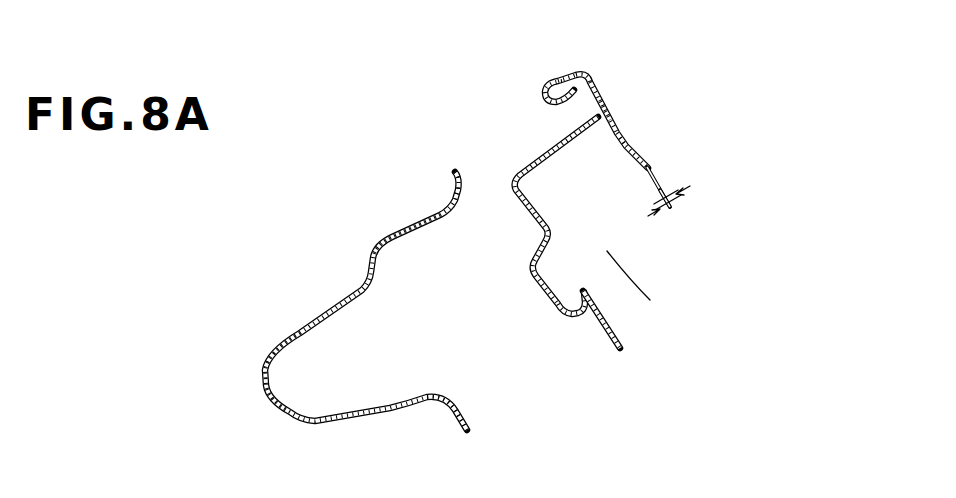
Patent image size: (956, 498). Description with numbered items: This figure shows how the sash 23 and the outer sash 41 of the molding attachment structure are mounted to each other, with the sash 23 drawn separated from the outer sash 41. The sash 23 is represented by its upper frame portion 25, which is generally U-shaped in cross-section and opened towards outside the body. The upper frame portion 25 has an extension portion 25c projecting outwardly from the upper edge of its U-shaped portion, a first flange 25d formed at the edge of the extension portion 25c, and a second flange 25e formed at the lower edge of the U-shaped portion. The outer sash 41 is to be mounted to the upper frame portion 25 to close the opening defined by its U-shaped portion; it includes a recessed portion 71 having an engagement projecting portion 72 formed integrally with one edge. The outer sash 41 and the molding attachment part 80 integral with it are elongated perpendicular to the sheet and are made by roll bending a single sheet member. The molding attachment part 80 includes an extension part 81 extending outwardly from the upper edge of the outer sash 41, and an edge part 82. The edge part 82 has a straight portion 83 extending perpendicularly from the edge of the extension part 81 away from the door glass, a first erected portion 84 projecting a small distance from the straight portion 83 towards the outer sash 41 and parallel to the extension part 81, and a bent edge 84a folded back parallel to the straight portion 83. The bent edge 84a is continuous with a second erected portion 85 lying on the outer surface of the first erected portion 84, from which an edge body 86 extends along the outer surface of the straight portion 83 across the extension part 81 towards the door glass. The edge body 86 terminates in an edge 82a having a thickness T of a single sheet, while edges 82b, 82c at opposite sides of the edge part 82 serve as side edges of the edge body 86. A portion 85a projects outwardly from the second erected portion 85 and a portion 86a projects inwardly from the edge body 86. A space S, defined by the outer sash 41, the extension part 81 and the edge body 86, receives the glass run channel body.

The upper frame portion 25 is at (264, 387).
The sash 23 is at (229, 405).
The extension portion 25c is at (392, 232).
The first flange 25d is at (448, 178).
The second flange 25e is at (460, 424).
The extension part 81 is at (520, 165).
The recessed portion 71 is at (540, 288).
The engagement projecting portion 72 is at (577, 300).
The outer sash 41 is at (609, 343).
The molding attachment part 80 is at (725, 196).
The edge part 82 is at (595, 76).
The edge 82a is at (648, 155).
The edge 82b is at (583, 73).
The edge 82c is at (653, 172).
The straight portion 83 is at (600, 100).
The first erected portion 84 is at (583, 105).
The edge 84a is at (543, 103).
The second erected portion 85 is at (560, 76).
The portion 85a is at (546, 86).
The edge body 86 is at (625, 122).
The portion 86a is at (617, 145).
The thickness T is at (669, 216).
The space S is at (612, 263).